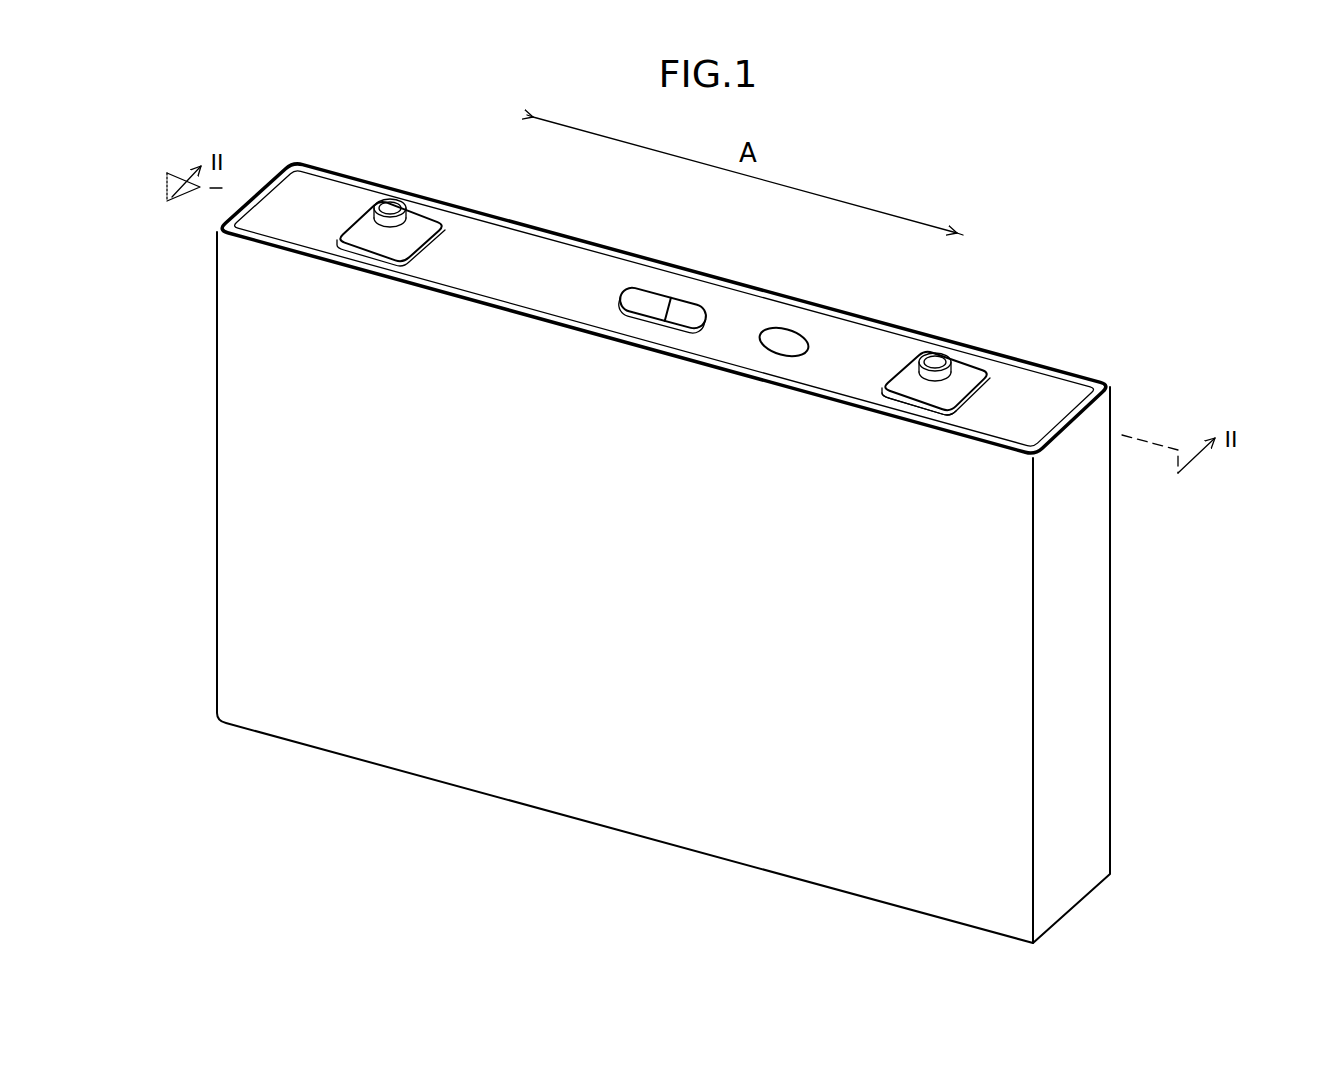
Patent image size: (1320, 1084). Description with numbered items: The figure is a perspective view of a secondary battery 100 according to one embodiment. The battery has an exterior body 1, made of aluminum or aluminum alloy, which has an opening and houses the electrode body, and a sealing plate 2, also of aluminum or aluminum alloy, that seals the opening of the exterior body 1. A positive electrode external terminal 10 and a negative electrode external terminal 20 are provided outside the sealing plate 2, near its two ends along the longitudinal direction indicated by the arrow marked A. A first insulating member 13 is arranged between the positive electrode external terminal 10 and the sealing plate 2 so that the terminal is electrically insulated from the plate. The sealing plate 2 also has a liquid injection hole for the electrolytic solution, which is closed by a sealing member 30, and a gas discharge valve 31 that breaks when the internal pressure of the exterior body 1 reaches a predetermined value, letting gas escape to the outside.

The secondary battery 100 is at (693, 535).
The exterior body 1 is at (1100, 600).
The sealing plate 2 is at (1057, 388).
The positive electrode external terminal 10 is at (967, 370).
The first insulating member 13 is at (983, 390).
The negative electrode external terminal 20 is at (418, 223).
The sealing member 30 is at (794, 340).
The gas discharge valve 31 is at (688, 318).